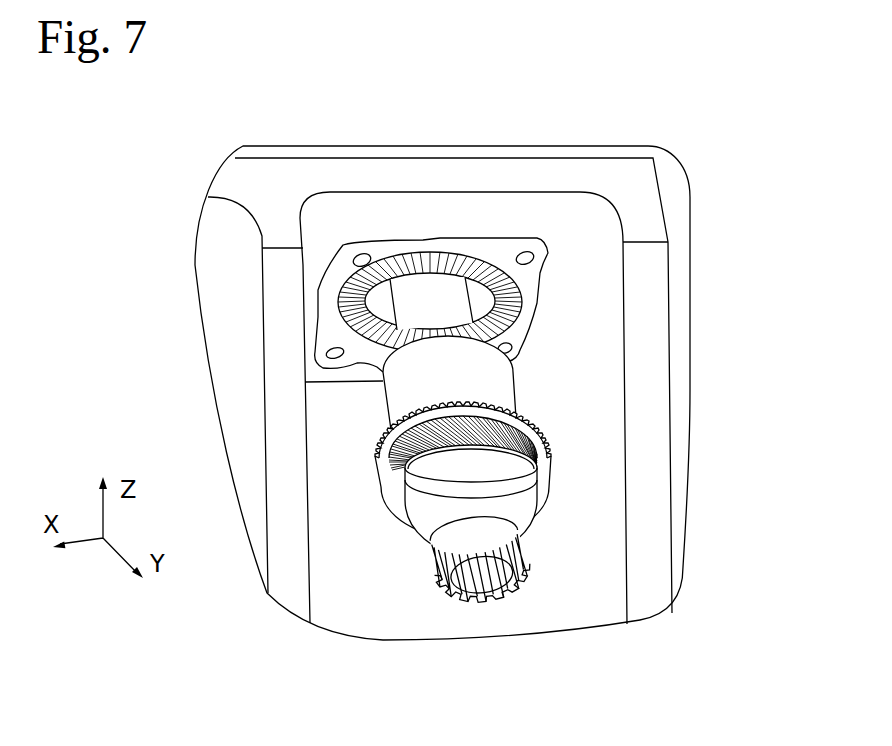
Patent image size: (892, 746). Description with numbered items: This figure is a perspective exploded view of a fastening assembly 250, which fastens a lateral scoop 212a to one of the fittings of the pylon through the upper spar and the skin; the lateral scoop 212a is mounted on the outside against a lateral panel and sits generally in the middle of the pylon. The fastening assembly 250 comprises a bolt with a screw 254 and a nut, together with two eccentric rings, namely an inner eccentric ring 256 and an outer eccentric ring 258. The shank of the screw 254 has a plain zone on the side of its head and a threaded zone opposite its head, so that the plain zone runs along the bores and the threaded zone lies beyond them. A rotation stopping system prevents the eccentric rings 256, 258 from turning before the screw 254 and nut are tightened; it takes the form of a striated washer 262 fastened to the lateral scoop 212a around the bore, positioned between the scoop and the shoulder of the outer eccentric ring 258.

The lateral scoop 212a is at (282, 416).
The fastening assembly 250 is at (318, 645).
The screw 254 is at (513, 570).
The inner eccentric ring 256 is at (527, 476).
The outer eccentric ring 258 is at (487, 393).
The striated washer 262 is at (530, 308).